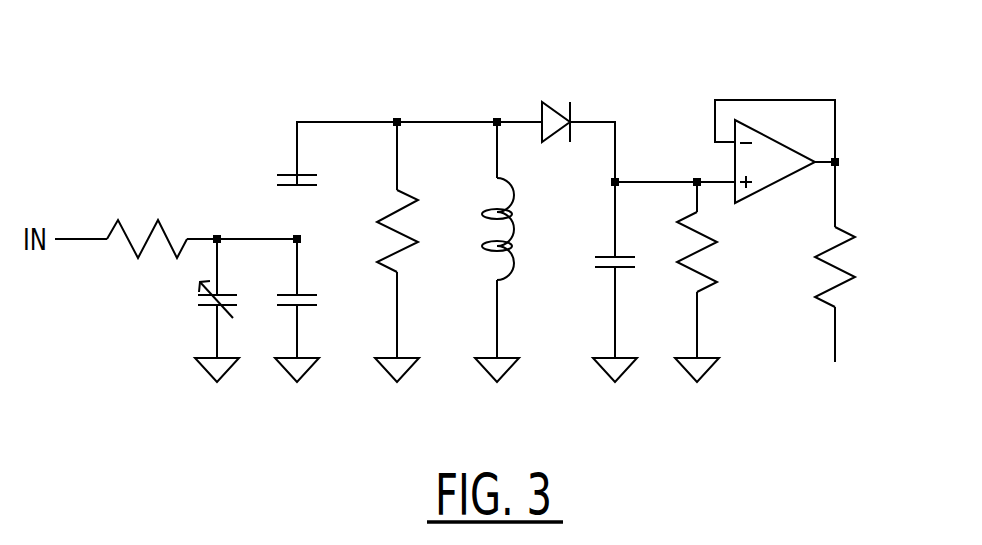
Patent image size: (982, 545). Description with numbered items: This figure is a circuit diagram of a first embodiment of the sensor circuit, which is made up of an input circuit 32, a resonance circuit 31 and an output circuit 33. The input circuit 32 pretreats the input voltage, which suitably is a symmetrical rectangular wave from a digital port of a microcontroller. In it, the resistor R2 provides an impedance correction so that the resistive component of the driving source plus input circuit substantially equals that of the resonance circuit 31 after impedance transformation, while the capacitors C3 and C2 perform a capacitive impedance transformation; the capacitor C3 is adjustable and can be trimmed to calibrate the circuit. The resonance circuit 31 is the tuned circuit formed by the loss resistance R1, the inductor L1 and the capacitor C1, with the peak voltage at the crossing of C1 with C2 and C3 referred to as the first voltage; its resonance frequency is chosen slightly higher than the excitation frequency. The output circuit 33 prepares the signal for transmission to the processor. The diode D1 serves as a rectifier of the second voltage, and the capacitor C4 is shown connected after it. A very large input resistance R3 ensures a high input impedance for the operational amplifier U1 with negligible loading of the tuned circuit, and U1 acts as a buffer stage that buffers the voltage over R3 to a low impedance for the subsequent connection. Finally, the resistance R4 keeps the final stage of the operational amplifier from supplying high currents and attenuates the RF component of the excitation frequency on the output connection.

The resonance circuit 31 is at (530, 53).
The input circuit 32 is at (92, 415).
The output circuit 33 is at (540, 53).
The loss resistance R1 is at (415, 252).
The resistor R2 is at (147, 219).
The input resistance R3 is at (717, 282).
The resistance R4 is at (857, 262).
The capacitor C1 is at (306, 160).
The capacitor C2 is at (305, 310).
The adjustable capacitor C3 is at (226, 310).
The capacitor C4 is at (625, 282).
The inductor L1 is at (513, 252).
The diode D1 is at (558, 103).
The operational amplifier U1 is at (777, 151).